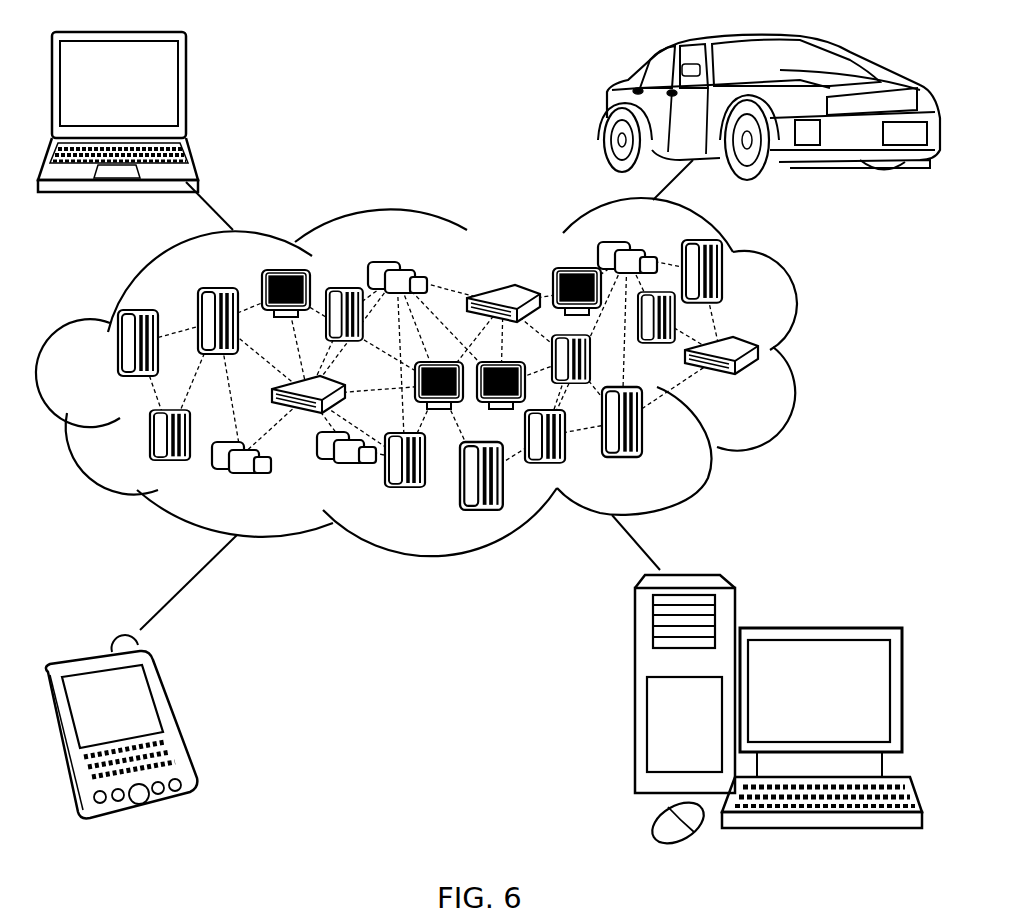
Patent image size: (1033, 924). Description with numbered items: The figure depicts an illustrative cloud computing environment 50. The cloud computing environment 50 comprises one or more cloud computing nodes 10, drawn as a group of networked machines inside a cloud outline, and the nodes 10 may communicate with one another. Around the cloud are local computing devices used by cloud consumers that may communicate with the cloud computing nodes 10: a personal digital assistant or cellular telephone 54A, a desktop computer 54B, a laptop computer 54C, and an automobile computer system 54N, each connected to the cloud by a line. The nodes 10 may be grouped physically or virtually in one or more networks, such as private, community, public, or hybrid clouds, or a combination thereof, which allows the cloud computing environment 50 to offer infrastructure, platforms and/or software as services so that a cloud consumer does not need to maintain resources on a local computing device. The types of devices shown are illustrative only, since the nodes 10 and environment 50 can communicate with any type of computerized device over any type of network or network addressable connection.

The cloud computing nodes 10 is at (771, 386).
The cloud computing environment 50 is at (818, 355).
The personal digital assistant (PDA) or cellular telephone 54A is at (173, 717).
The desktop computer 54B is at (815, 627).
The laptop computer 54C is at (186, 94).
The automobile computer system 54N is at (607, 110).